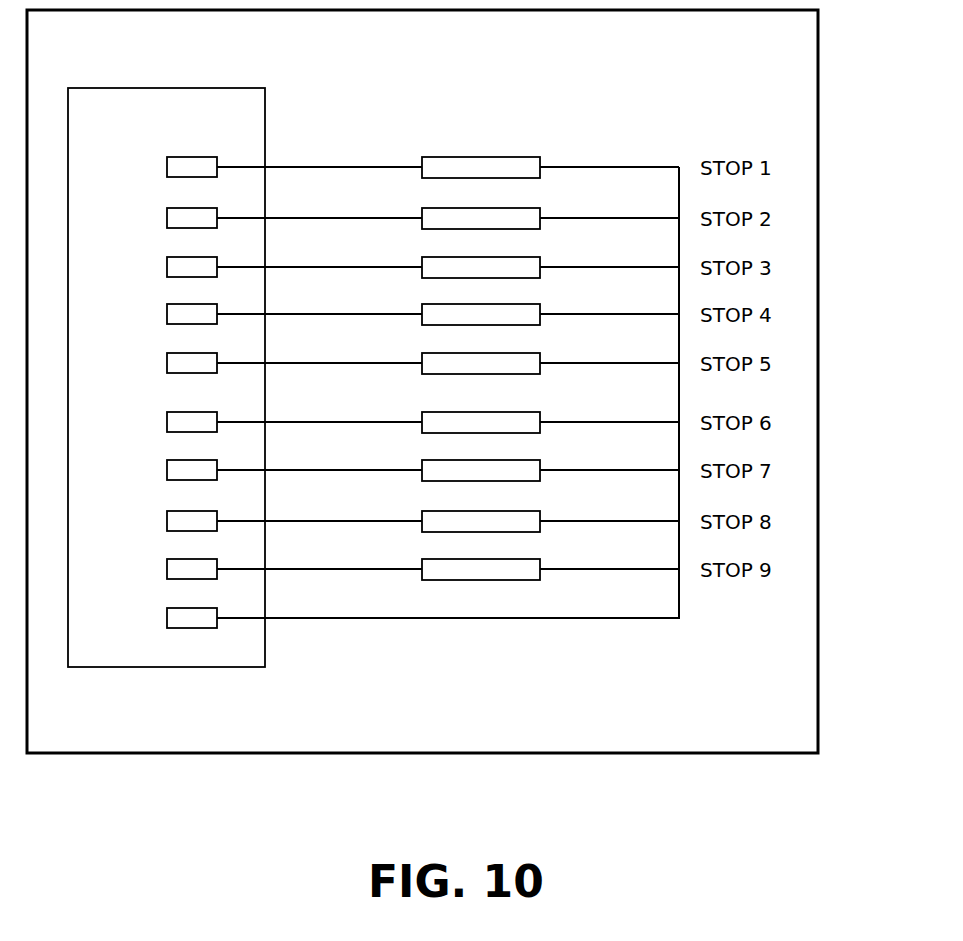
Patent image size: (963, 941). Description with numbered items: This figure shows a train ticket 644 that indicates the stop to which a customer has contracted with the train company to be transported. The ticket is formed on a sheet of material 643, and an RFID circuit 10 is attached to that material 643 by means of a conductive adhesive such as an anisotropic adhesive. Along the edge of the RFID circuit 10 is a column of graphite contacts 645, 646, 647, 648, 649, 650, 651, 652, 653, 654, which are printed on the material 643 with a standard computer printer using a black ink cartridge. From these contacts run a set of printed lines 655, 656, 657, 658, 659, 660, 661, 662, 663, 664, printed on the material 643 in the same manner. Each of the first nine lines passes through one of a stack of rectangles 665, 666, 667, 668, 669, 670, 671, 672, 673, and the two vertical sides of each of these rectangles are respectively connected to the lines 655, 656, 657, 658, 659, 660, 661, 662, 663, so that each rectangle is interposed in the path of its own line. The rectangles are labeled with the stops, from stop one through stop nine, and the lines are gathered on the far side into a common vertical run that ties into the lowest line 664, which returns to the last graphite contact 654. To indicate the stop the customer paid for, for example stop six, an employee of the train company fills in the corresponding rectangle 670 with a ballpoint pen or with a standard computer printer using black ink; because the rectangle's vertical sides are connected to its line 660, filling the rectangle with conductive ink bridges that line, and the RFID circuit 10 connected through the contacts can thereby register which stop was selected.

The RFID circuit 10 is at (155, 88).
The material 643 is at (624, 723).
The train ticket 644 is at (351, 722).
The graphite contact 645 is at (167, 158).
The graphite contact 646 is at (167, 209).
The graphite contact 647 is at (167, 258).
The graphite contact 648 is at (167, 305).
The graphite contact 649 is at (167, 354).
The graphite contact 650 is at (167, 413).
The graphite contact 651 is at (167, 461).
The graphite contact 652 is at (167, 512).
The graphite contact 653 is at (167, 560).
The graphite contact 654 is at (167, 609).
The line 655 is at (366, 165).
The line 656 is at (366, 216).
The line 657 is at (366, 265).
The line 658 is at (366, 312).
The line 659 is at (366, 361).
The line 660 is at (366, 420).
The line 661 is at (366, 468).
The line 662 is at (366, 519).
The line 663 is at (366, 567).
The line 664 is at (392, 614).
The rectangle 665 is at (522, 157).
The rectangle 666 is at (522, 208).
The rectangle 667 is at (522, 257).
The rectangle 668 is at (522, 304).
The rectangle 669 is at (522, 353).
The rectangle 670 is at (522, 412).
The rectangle 671 is at (522, 460).
The rectangle 672 is at (522, 511).
The rectangle 673 is at (522, 559).